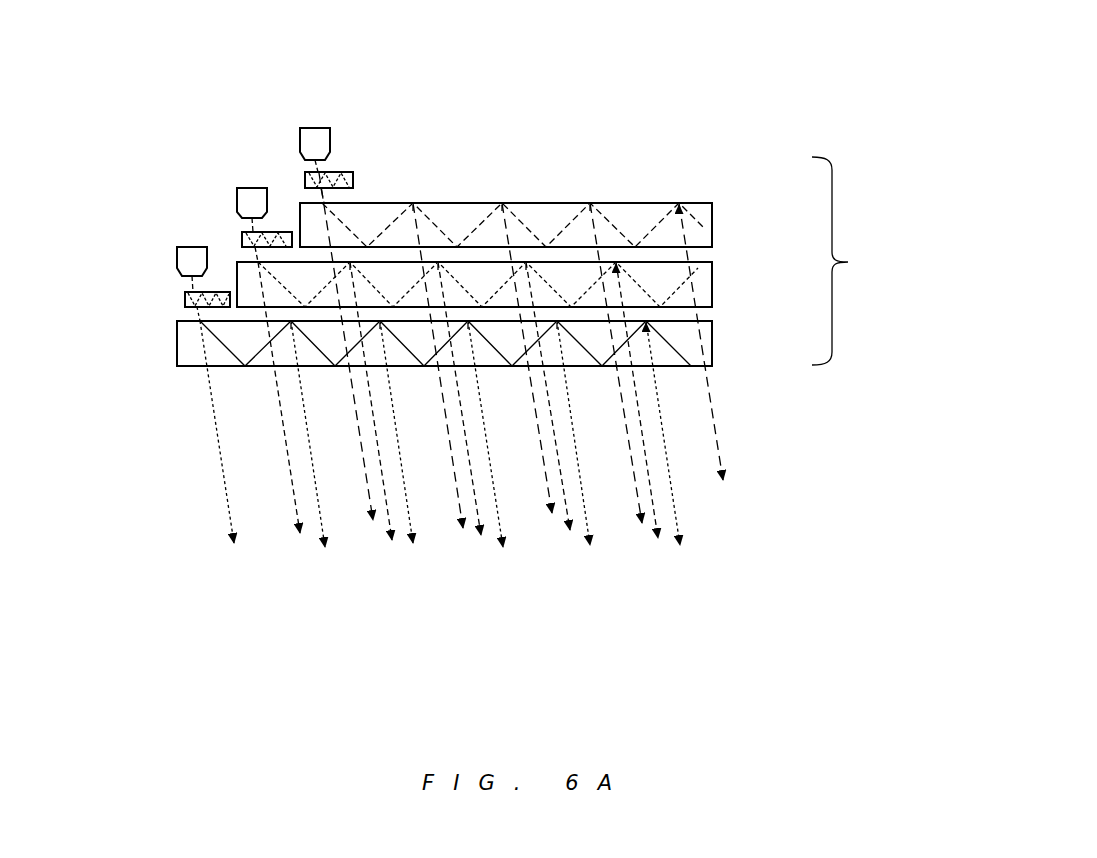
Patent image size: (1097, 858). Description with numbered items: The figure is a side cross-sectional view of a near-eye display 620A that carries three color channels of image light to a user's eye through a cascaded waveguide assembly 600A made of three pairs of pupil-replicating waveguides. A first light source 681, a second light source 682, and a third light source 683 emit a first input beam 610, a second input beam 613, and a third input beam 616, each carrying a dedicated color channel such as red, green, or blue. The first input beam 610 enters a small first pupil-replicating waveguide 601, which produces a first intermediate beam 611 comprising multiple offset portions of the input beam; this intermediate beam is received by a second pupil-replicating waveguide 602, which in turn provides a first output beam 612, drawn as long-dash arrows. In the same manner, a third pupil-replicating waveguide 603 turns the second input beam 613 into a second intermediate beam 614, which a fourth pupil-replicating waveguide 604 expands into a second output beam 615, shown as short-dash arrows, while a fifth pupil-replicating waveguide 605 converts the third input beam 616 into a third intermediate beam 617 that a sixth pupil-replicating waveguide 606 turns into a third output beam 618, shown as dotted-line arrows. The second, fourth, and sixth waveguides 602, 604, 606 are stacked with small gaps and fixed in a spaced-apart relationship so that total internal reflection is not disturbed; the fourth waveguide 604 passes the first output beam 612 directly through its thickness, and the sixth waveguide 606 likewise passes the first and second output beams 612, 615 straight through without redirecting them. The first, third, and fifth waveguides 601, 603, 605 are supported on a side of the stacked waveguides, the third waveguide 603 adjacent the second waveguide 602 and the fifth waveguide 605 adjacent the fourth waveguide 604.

The near-eye display (NED) 620A is at (674, 108).
The cascaded waveguide assembly 600A is at (862, 261).
The second pupil-replicating waveguide 602 is at (712, 220).
The fourth pupil-replicating waveguide 604 is at (712, 277).
The sixth pupil-replicating waveguide 606 is at (712, 337).
The first light source 681 is at (313, 128).
The second light source 682 is at (252, 188).
The third light source 683 is at (177, 266).
The first pupil-replicating waveguide 601 is at (353, 180).
The third pupil-replicating waveguide 603 is at (242, 237).
The fifth pupil-replicating waveguide 605 is at (185, 296).
The first input beam 610 is at (318, 171).
The second input beam 613 is at (252, 226).
The third input beam 616 is at (192, 283).
The first intermediate beam 611 is at (362, 195).
The second intermediate beam 614 is at (245, 256).
The third intermediate beam 617 is at (190, 313).
The first output beam 612 is at (542, 350).
The second output beam 615 is at (455, 415).
The third output beam 618 is at (455, 445).